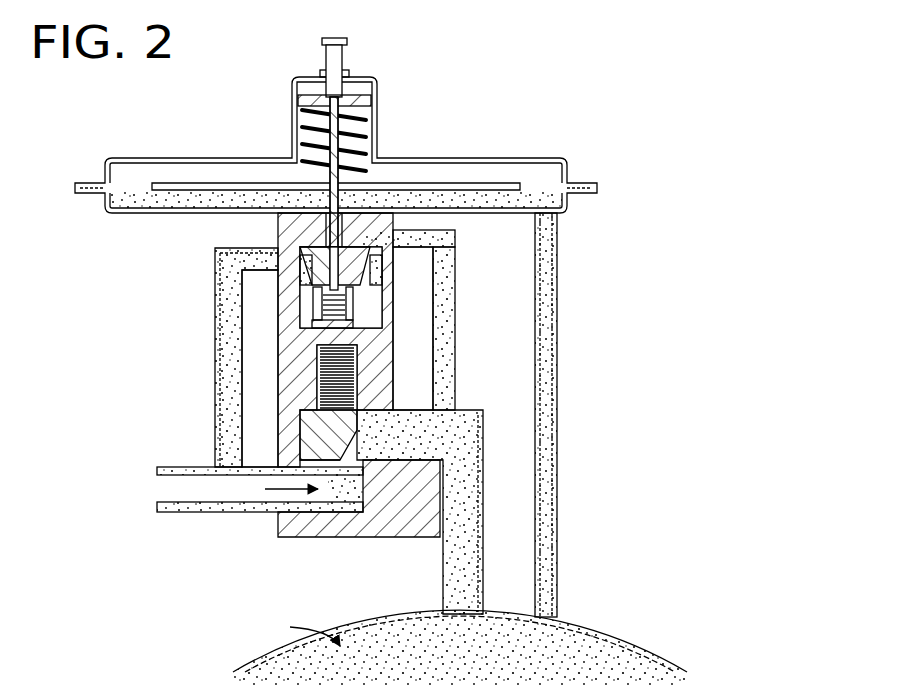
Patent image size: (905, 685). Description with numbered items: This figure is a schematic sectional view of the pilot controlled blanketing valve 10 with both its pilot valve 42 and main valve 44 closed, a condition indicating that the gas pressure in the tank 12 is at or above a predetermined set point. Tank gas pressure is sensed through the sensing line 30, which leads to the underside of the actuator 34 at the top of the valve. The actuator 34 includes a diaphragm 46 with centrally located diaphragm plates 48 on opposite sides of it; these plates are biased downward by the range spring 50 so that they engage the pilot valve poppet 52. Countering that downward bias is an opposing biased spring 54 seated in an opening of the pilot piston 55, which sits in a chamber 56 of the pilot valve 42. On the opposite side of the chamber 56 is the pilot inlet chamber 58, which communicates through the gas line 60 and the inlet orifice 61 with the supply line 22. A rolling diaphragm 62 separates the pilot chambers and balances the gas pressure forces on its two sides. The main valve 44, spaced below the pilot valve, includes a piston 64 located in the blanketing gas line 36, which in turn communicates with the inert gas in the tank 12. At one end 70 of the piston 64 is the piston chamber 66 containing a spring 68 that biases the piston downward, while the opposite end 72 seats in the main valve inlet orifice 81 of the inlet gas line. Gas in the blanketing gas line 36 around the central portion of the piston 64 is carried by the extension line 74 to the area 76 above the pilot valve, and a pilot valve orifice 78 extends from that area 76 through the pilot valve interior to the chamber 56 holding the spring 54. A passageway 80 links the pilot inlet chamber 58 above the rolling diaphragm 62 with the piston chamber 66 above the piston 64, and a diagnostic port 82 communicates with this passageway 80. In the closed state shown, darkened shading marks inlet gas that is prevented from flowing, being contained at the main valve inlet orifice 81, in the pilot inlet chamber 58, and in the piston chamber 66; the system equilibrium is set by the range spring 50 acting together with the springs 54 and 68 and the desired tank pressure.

The pilot controlled blanketing valve 10 is at (414, 88).
The tank 12 is at (636, 634).
The supply line 22 is at (170, 512).
The sensing line 30 is at (557, 470).
The actuator 34 is at (510, 158).
The blanketing gas line 36 is at (457, 582).
The pilot valve 42 is at (290, 243).
The main valve 44 is at (280, 421).
The diaphragm 46 is at (540, 186).
The diaphragm plates 48 is at (497, 190).
The range spring 50 is at (300, 104).
The pilot valve poppet 52 is at (332, 190).
The opposing biased spring 54 is at (383, 318).
The pilot piston 55 is at (280, 340).
The chamber 56 is at (383, 268).
The pilot inlet chamber 58 is at (385, 230).
The gas line 60 is at (217, 268).
The inlet orifice 61 is at (300, 288).
The rolling diaphragm 62 is at (300, 313).
The piston 64 is at (420, 431).
The piston chamber 66 is at (320, 359).
The spring 68 is at (380, 372).
The end of the piston 70 is at (300, 386).
The opposite end of the piston 72 is at (300, 440).
The extension line 74 is at (455, 352).
The area above the pilot valve 76 is at (330, 228).
The pilot valve orifice 78 is at (348, 214).
The passageway 80 is at (420, 272).
The main valve inlet orifice 81 is at (300, 537).
The diagnostic port 82 is at (408, 350).